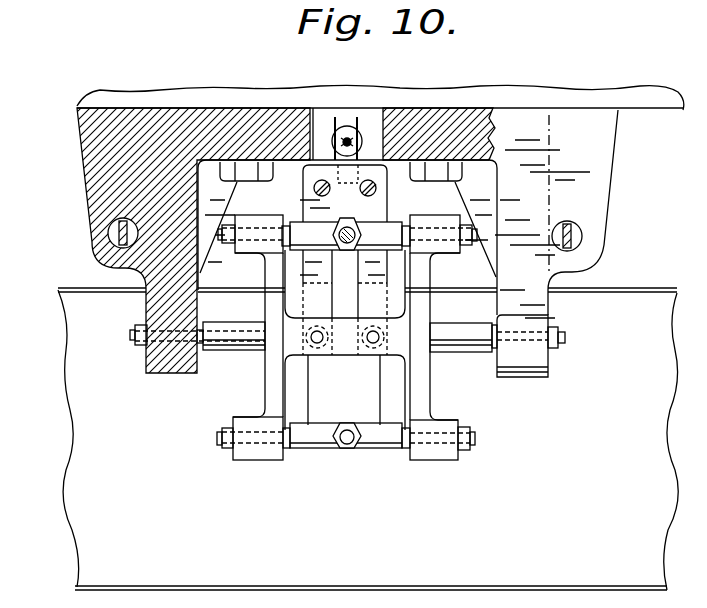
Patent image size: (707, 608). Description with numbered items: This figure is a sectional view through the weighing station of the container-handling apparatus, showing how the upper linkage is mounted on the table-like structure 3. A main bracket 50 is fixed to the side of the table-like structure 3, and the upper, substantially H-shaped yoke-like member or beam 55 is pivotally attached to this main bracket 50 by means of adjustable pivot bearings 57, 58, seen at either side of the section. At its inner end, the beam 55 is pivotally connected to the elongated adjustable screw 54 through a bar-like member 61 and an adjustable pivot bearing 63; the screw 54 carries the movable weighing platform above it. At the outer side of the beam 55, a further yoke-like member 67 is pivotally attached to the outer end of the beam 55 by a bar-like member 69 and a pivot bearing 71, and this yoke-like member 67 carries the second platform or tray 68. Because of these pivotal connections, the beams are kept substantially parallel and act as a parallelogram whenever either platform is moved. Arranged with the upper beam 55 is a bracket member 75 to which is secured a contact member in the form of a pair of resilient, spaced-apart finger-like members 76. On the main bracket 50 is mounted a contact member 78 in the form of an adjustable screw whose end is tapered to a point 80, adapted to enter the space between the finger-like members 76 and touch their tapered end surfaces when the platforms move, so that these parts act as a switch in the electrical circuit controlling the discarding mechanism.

The table-like structure 3 is at (562, 96).
The main bracket 50 is at (172, 122).
The elongated adjustable screw 54 is at (362, 232).
The upper H-shaped yoke-like member or beam 55 is at (422, 388).
The adjustable pivot bearing 57 is at (199, 334).
The adjustable pivot bearing 58 is at (548, 316).
The bar-like member 61 is at (296, 224).
The adjustable pivot bearing 63 is at (282, 252).
The yoke-like member 67 is at (328, 405).
The second platform or tray 68 is at (82, 478).
The bar-like member 69 is at (373, 446).
The pivot bearing 71 is at (287, 450).
The bracket member 75 is at (388, 175).
The resilient spaced-apart finger-like members 76 is at (347, 110).
The contact member 78 is at (336, 142).
The tapered point 80 is at (339, 138).